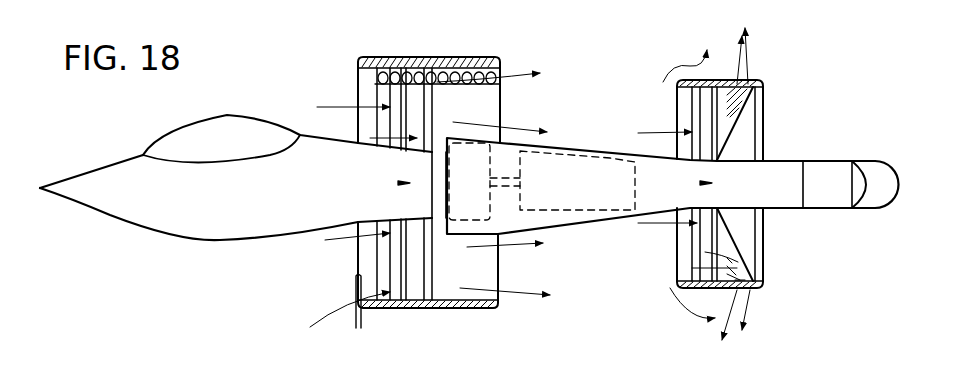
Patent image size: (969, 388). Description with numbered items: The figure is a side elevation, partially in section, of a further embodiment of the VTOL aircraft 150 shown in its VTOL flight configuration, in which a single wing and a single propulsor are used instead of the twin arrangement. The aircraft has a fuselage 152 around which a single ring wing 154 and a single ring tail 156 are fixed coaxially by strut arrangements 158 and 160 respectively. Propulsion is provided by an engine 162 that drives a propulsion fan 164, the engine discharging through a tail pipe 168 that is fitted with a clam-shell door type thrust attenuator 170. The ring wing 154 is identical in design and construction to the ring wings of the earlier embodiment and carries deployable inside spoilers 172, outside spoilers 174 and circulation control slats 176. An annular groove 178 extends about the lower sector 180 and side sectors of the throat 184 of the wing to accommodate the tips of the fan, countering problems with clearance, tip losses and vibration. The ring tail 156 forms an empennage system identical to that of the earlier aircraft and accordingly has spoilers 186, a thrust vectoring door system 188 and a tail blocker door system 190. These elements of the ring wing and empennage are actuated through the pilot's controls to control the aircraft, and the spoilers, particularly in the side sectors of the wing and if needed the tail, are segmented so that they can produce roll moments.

The aircraft 150 is at (118, 252).
The fuselage 152 is at (104, 160).
The ring wing 154 is at (401, 58).
The ring tail 156 is at (677, 98).
The strut arrangement 158 is at (413, 230).
The strut arrangement 160 is at (705, 212).
The engine 162 is at (568, 228).
The propulsion fan 164 is at (437, 110).
The tail pipe 168 is at (823, 162).
The thrust attenuator 170 is at (877, 161).
The inside spoilers 172 is at (378, 78).
The outside spoilers 174 is at (383, 60).
The circulation control slats 176 is at (362, 318).
The annular groove 178 is at (447, 309).
The lower sector 180 is at (495, 306).
The throat 184 is at (367, 252).
The spoilers 186 is at (692, 280).
The thrust vectoring door system 188 is at (756, 297).
The tail blocker door system 190 is at (742, 110).